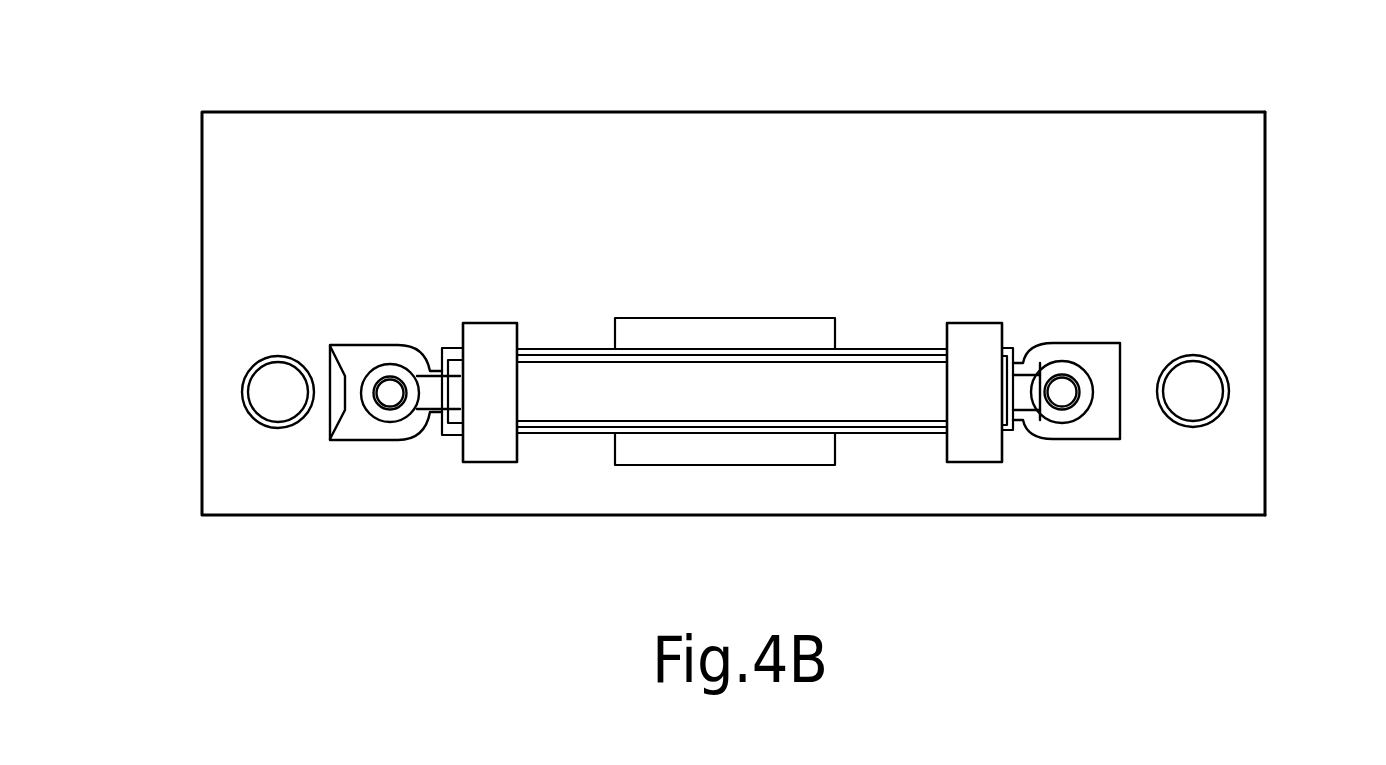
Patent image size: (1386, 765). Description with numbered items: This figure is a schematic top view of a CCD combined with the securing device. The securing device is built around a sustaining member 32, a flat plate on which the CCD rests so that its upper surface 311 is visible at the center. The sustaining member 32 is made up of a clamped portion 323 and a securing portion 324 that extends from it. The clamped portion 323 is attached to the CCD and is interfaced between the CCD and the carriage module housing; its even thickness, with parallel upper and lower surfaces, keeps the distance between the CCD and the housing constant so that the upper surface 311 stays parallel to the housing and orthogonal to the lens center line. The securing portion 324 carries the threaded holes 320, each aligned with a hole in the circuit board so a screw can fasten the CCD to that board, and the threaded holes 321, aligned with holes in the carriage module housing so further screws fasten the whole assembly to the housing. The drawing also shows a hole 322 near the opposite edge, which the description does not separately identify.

The sustaining member 32 is at (553, 135).
The upper surface of the CCD 311 is at (693, 382).
The threaded holes 320 is at (390, 397).
The threaded holes 321 is at (275, 398).
The mounting hole 322 is at (1197, 397).
The clamped portion 323 is at (487, 340).
The securing portion 324 is at (1235, 267).